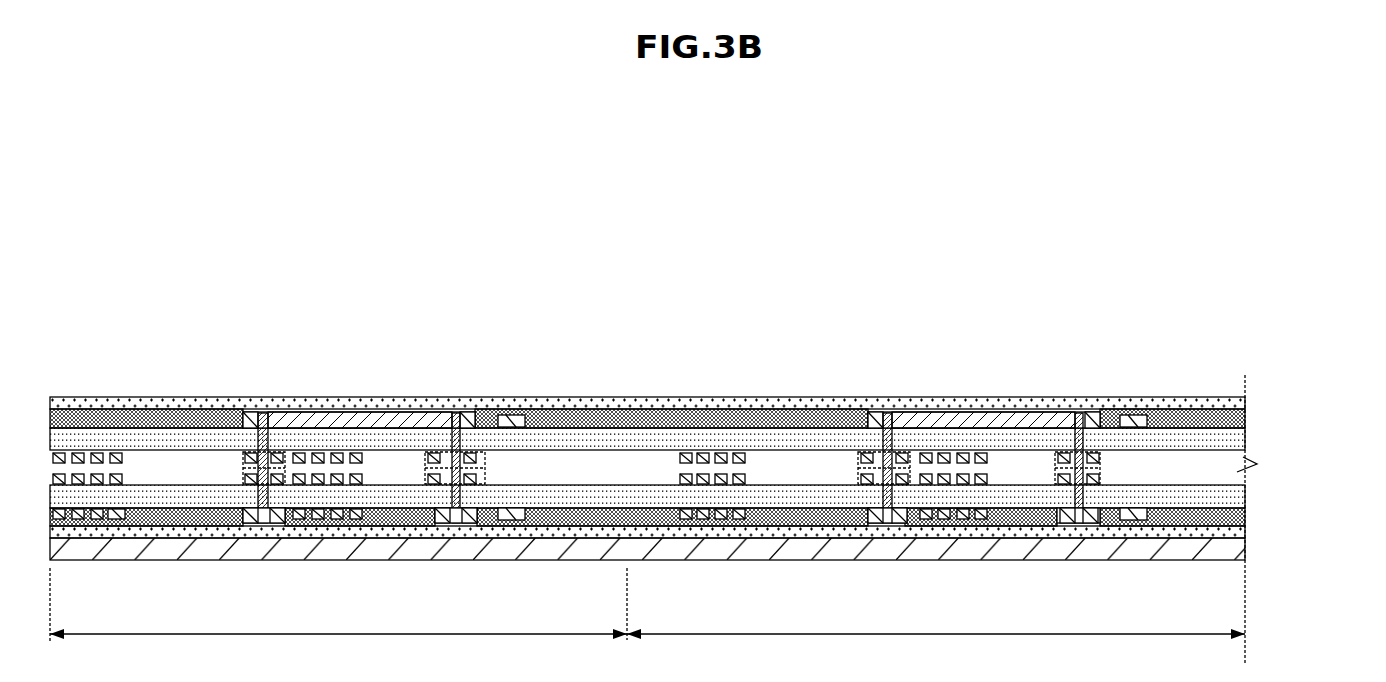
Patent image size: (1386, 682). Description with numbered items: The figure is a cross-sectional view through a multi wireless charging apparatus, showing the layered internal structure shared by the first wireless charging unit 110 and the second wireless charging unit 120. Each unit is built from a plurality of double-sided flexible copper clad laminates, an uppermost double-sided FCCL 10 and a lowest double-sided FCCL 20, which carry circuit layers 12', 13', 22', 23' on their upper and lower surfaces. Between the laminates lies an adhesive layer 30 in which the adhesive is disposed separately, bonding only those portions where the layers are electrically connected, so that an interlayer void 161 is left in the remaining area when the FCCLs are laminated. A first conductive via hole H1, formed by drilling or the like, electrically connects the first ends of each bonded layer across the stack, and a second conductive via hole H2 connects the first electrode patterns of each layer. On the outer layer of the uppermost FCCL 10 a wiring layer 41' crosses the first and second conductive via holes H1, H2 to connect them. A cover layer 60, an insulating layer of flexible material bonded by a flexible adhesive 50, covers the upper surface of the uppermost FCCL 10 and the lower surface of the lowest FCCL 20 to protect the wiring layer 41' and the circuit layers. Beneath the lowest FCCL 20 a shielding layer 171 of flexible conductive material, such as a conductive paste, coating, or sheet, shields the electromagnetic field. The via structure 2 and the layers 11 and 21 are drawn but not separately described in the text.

The first wireless charging unit 110 is at (350, 373).
The second wireless charging unit 120 is at (1179, 356).
The interlayer void 161 is at (606, 465).
The cover layer 60 is at (936, 405).
The flexible adhesive 50 is at (980, 410).
The wiring layer 41' is at (671, 384).
The via 2 is at (1096, 470).
The circuit layer 12' is at (682, 395).
The first circuit layer 11 is at (1147, 424).
The circuit layer 13' is at (682, 437).
The adhesive layer 30 is at (1118, 459).
The circuit layer 22' is at (682, 490).
The second circuit layer 21 is at (1150, 513).
The circuit layer 23' is at (682, 533).
The double-sided flexible copper clad laminate 10 is at (1318, 390).
The double-sided flexible copper clad laminate 20 is at (1318, 483).
The shielding layer 171 is at (372, 550).
The first conductive via hole H1 is at (887, 525).
The second conductive via hole H2 is at (1080, 525).